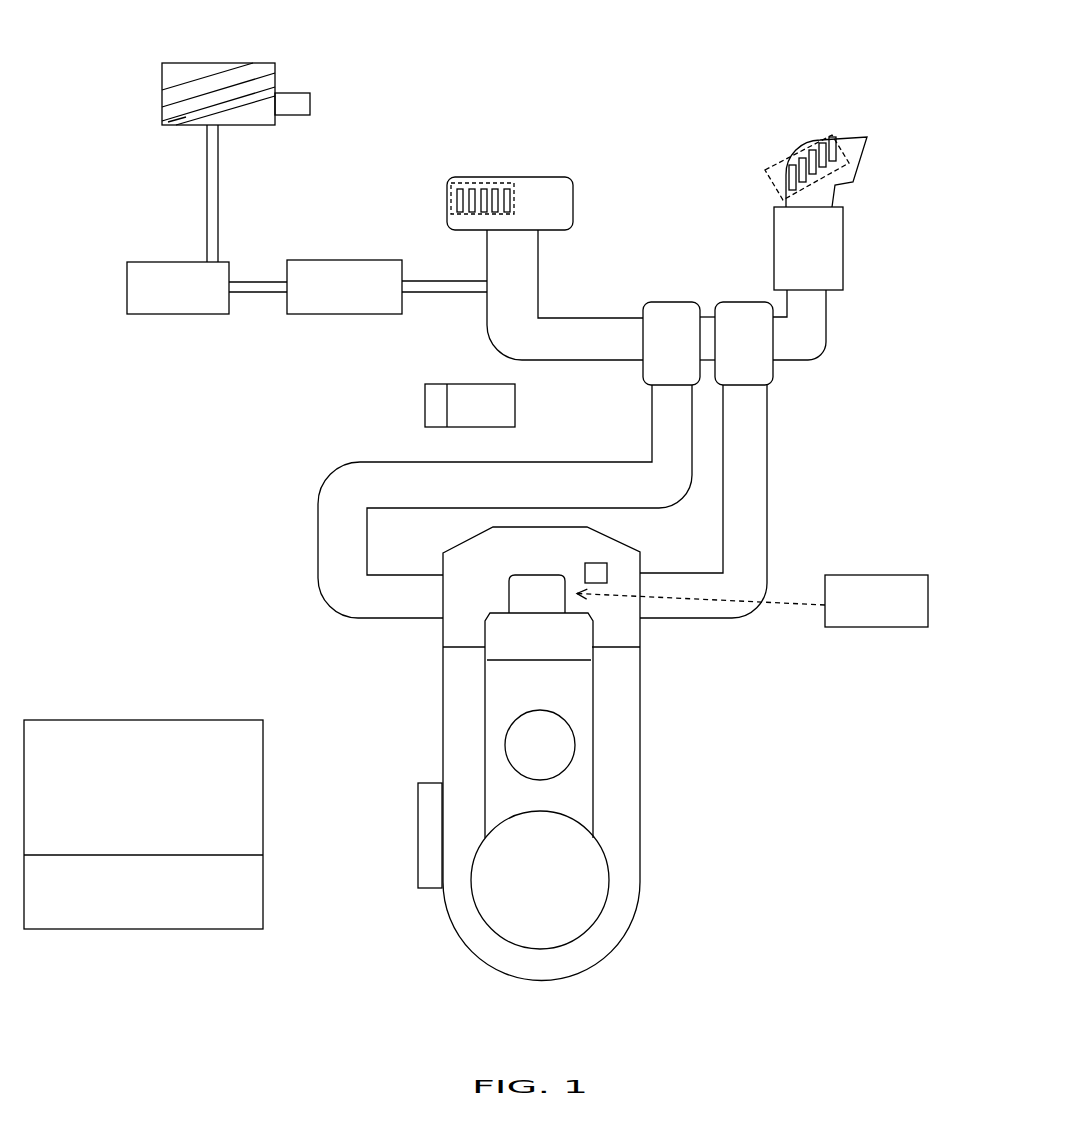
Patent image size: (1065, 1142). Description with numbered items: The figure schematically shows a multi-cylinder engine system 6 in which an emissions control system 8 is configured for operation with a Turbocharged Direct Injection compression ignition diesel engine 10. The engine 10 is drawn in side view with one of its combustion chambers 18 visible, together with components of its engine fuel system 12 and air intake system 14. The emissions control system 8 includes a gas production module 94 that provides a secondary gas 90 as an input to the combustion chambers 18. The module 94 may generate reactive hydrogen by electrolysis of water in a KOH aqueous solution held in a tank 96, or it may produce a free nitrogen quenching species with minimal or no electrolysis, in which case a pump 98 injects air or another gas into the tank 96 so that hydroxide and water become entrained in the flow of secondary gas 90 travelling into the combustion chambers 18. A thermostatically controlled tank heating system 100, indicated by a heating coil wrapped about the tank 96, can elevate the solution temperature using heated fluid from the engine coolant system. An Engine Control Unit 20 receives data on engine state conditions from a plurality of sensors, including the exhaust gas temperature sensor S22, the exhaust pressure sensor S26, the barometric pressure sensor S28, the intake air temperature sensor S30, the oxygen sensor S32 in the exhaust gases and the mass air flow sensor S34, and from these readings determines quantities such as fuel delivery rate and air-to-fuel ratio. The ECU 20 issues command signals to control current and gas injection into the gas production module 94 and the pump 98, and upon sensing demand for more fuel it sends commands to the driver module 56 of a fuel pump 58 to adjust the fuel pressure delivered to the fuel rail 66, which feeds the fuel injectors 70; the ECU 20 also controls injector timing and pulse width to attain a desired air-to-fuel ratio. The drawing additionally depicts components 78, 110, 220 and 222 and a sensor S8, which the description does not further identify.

The multi-cylinder engine system 6 is at (64, 22).
The emissions control system 8 is at (358, 219).
The diesel engine 10 is at (677, 901).
The engine fuel system 12 is at (803, 460).
The air intake system 14 is at (553, 209).
The combustion chamber 18 is at (551, 742).
The Engine Control Unit 20 is at (32, 709).
The driver module 56 is at (437, 416).
The fuel pump 58 is at (451, 372).
The fuel rail 66 is at (600, 573).
The fuel injector 70 is at (553, 592).
The injection controller 78 is at (752, 601).
The secondary gas 90 is at (229, 187).
The gas production module 94 is at (215, 80).
The tank 96 is at (218, 106).
The pump 98 is at (292, 104).
The tank heating system 100 is at (181, 118).
The exhaust outlet 110 is at (826, 241).
The air filter 220 is at (333, 270).
The air inlet 222 is at (185, 283).
The sensor S8 is at (826, 140).
The exhaust gas temperature sensor S22 is at (815, 142).
The exhaust pressure sensor S26 is at (801, 158).
The barometric pressure sensor S28 is at (496, 189).
The intake air temperature sensor S30 is at (481, 189).
The O2 sensor S32 is at (784, 166).
The Mass Air Flow sensor S34 is at (466, 188).